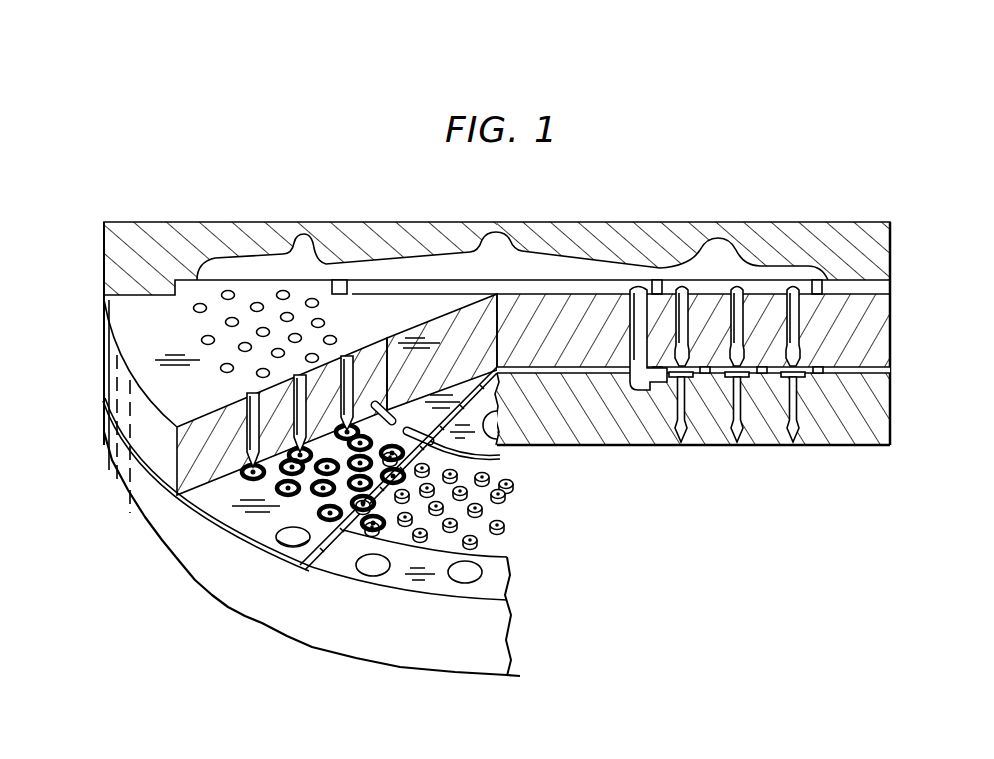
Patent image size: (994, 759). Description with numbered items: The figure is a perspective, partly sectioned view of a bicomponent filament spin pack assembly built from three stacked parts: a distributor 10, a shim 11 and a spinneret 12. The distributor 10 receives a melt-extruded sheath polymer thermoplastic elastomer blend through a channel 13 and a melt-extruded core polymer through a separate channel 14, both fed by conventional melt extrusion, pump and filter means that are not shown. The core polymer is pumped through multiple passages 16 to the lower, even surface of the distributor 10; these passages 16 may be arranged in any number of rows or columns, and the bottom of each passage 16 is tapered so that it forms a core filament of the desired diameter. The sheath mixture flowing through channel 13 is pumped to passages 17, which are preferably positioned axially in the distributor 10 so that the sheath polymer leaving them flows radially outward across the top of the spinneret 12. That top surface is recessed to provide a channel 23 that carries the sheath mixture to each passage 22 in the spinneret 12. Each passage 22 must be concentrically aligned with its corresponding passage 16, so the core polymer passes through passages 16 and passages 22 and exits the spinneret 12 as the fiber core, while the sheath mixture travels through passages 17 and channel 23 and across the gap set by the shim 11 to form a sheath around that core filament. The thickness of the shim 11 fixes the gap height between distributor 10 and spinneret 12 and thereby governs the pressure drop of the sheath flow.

The distributor 10 is at (150, 353).
The shim 11 is at (305, 547).
The spinneret 12 is at (455, 655).
The channel 13 is at (475, 255).
The channel 14 is at (313, 265).
The passages 16 is at (312, 303).
The passages 17 is at (420, 347).
The passages 22 is at (678, 432).
The channel 23 is at (710, 377).